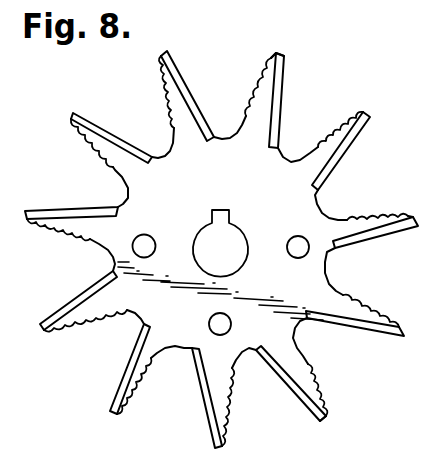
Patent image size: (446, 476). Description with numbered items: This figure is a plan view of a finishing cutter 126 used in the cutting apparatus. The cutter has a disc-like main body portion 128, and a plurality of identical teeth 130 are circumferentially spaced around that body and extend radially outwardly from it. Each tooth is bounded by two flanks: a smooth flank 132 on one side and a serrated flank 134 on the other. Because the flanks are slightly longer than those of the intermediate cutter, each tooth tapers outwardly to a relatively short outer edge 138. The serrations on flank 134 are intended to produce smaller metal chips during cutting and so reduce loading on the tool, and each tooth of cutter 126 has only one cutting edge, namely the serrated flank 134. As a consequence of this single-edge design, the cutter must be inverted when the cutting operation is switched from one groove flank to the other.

The finishing cutter 126 is at (352, 80).
The disc-like main body portion 128 is at (238, 187).
The teeth 130 is at (70, 113).
The smooth flank 132 is at (113, 137).
The serrated flank 134 is at (93, 142).
The outer edge 138 is at (277, 51).